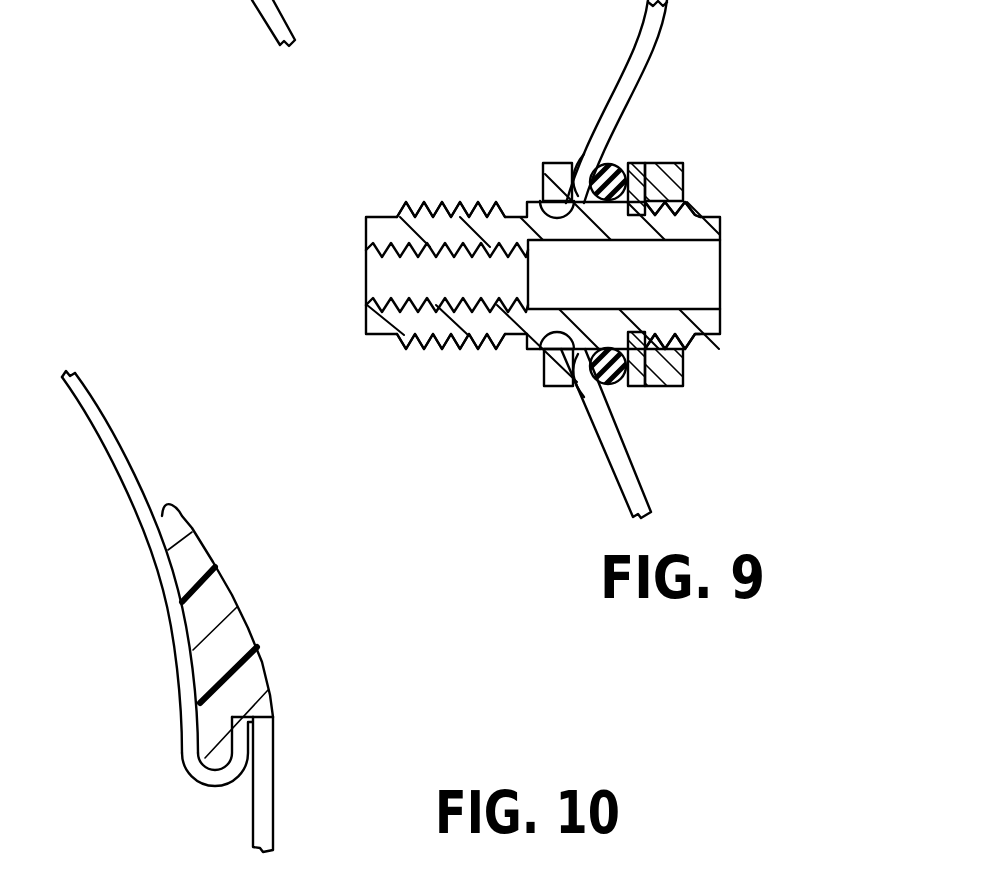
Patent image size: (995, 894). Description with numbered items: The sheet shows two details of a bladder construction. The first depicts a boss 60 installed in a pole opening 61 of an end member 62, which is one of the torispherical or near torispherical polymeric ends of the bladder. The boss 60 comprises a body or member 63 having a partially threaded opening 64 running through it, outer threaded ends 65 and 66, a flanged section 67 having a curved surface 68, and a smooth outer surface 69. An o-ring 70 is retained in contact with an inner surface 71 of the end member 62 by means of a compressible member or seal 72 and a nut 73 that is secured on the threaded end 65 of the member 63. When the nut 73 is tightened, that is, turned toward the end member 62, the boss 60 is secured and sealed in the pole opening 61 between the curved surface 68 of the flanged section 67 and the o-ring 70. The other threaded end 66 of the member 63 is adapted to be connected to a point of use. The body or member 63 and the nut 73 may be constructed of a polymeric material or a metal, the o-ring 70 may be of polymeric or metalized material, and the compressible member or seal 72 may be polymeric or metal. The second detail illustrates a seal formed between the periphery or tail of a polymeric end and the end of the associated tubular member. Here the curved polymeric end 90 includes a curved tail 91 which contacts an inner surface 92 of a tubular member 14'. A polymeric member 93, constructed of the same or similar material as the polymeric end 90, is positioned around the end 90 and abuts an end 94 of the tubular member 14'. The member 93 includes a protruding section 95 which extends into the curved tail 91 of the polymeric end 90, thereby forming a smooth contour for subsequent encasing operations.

In FIG. 9, the boss 60 is at (462, 157).
In FIG. 9, the pole opening 61 is at (535, 201).
In FIG. 9, the end member 62 is at (614, 55).
In FIG. 9, the body or member 63 is at (723, 217).
In FIG. 9, the partially threaded opening 64 is at (722, 268).
In FIG. 9, the outer threaded end 65 is at (706, 210).
In FIG. 9, the outer threaded end 66 is at (433, 202).
In FIG. 9, the flanged section 67 is at (550, 386).
In FIG. 9, the curved surface 68 is at (571, 175).
In FIG. 9, the smooth outer surface 69 is at (540, 350).
In FIG. 9, the o-ring 70 is at (629, 163).
In FIG. 9, the inner surface 71 is at (596, 148).
In FIG. 9, the compressible member or seal 72 is at (638, 162).
In FIG. 9, the nut 73 is at (685, 372).
In FIG. 10, the curved polymeric end 90 is at (136, 475).
In FIG. 10, the curved tail 91 is at (218, 790).
In FIG. 10, the inner surface 92 is at (257, 732).
In FIG. 10, the polymeric member 93 is at (237, 590).
In FIG. 10, the end 94 is at (273, 731).
In FIG. 10, the protruding section 95 is at (218, 758).
In FIG. 10, the tubular member 14' is at (306, 784).